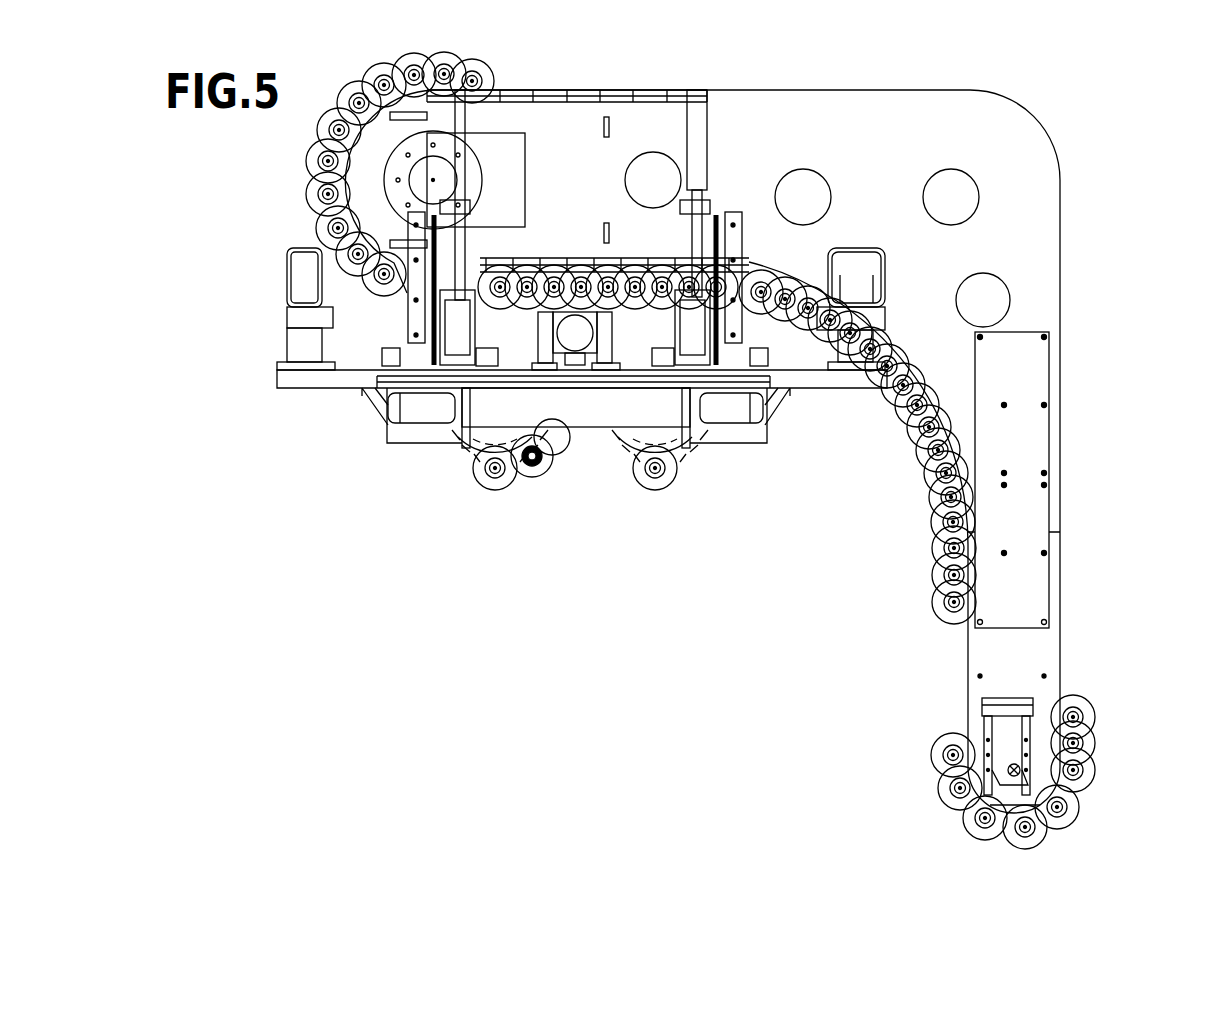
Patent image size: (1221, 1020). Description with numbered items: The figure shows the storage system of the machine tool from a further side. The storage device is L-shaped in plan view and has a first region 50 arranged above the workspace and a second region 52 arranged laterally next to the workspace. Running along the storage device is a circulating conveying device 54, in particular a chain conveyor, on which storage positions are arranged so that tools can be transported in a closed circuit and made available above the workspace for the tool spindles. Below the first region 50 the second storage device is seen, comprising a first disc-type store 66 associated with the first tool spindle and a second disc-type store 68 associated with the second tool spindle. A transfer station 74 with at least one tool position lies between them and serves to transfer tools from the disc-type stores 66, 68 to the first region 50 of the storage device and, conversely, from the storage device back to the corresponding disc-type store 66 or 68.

The first region 50 is at (653, 122).
The second region 52 is at (1037, 467).
The circulating conveying device 54 is at (1092, 708).
The first disc-type store 66 is at (650, 452).
The second disc-type store 68 is at (532, 458).
The transfer station 74 is at (675, 358).